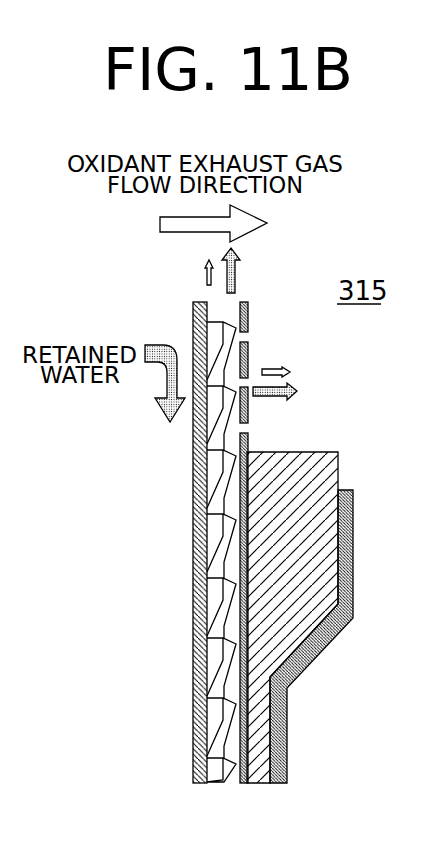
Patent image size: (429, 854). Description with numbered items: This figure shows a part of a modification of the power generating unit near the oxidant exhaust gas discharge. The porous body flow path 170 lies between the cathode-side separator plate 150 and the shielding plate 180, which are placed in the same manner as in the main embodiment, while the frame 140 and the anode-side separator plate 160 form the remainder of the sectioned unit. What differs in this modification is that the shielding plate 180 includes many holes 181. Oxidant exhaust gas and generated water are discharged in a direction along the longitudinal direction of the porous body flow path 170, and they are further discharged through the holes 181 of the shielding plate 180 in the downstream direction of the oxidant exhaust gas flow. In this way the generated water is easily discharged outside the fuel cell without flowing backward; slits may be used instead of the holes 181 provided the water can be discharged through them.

The frame 140 is at (317, 452).
The cathode-side separator plate 150 is at (200, 302).
The anode-side separator plate 160 is at (352, 490).
The porous body flow path 170 is at (227, 320).
The shielding plate 180 is at (257, 288).
The holes 181 is at (250, 330).